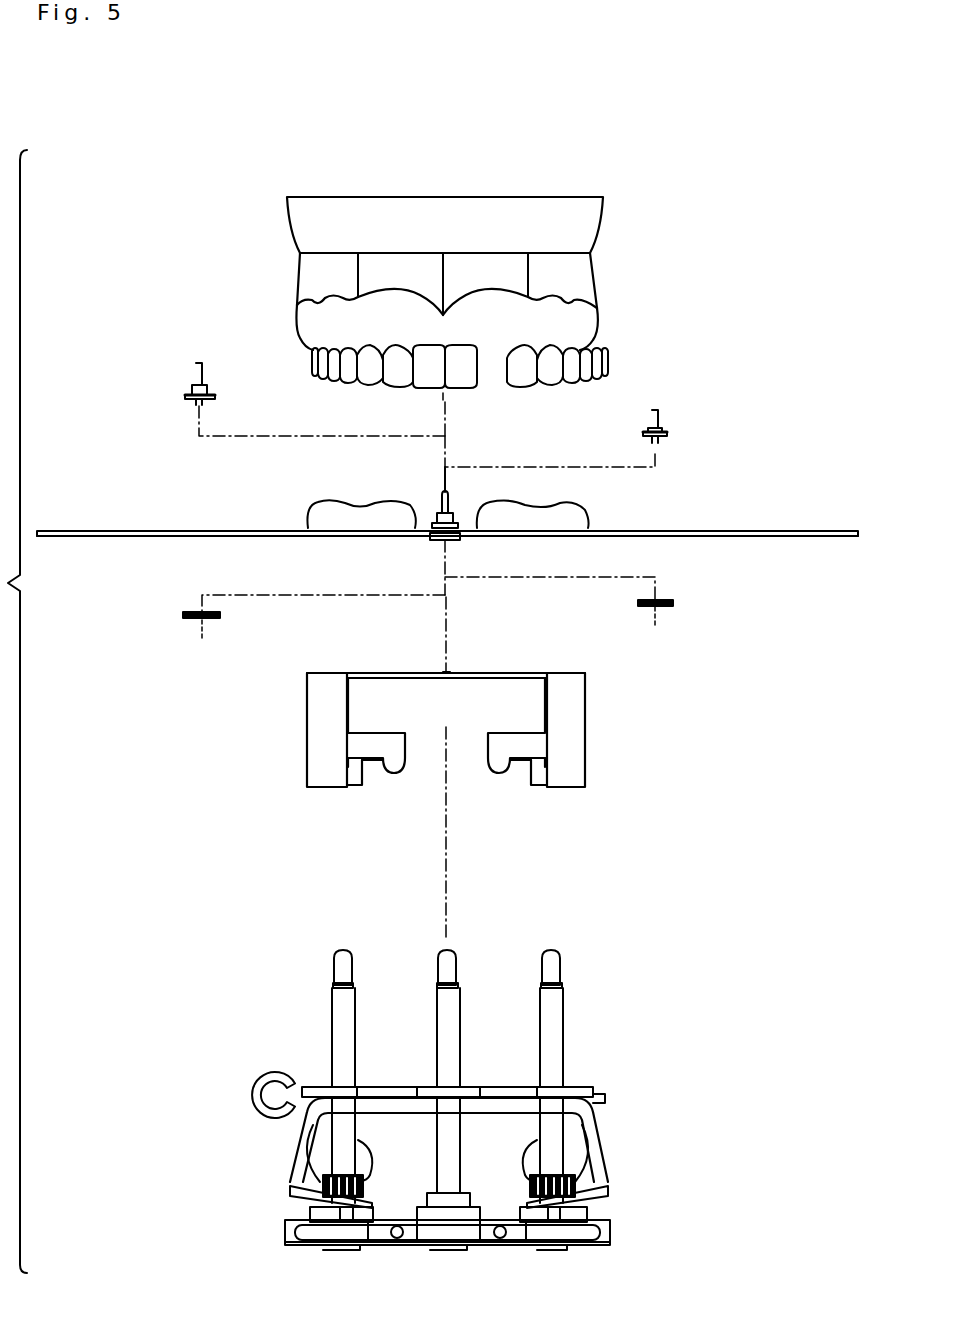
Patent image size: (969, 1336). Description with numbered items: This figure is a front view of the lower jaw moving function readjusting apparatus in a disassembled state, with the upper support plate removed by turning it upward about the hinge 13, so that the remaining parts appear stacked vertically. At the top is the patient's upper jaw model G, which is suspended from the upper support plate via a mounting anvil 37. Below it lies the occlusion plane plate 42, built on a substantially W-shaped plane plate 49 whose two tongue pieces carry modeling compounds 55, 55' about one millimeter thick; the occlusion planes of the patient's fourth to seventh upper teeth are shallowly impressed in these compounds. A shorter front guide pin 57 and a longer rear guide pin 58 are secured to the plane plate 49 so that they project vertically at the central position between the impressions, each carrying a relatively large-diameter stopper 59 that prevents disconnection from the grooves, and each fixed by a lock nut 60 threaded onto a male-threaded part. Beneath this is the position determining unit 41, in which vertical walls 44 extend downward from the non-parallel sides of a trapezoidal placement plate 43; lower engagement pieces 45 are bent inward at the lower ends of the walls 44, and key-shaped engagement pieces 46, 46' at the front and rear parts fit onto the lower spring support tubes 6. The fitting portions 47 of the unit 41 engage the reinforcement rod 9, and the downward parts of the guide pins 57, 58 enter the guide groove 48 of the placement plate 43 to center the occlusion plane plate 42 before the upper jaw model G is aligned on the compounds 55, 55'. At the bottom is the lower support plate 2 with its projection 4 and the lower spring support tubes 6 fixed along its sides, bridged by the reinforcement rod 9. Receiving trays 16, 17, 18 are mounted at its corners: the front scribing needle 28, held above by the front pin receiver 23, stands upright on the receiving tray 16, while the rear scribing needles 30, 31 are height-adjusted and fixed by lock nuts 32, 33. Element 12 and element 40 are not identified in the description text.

The mounting anvil 37 is at (570, 222).
The upper jaw model G is at (585, 273).
The rear guide pin 58 is at (199, 362).
The stopper 59 is at (215, 396).
The front guide pin 57 is at (658, 412).
The mounting assembly 40 is at (753, 463).
The occlusion plane plate 42 is at (842, 530).
The plane plate 49 is at (705, 530).
The modeling compound 55' is at (334, 502).
The modeling compound 55 is at (552, 500).
The lock nut 60 is at (460, 537).
The position determining unit 41 is at (455, 744).
The vertical wall 44 is at (320, 703).
The placement plate 43 is at (532, 673).
The guide groove 48 is at (447, 668).
The key-shaped engagement piece 46 is at (446, 753).
The key-shaped engagement piece 46' is at (461, 771).
The lower engagement piece 45 is at (362, 786).
The fitting portion 47 is at (372, 770).
The rear scribing needle 31 is at (358, 1040).
The front scribing needle 28 is at (460, 1040).
The rear scribing needle 30 is at (565, 1030).
The hinge 13 is at (595, 1090).
The ring 12 is at (252, 1095).
The lower support plate 2 is at (595, 1246).
The projection 4 is at (612, 1232).
The lock nut 33 is at (365, 1178).
The lock nut 32 is at (530, 1182).
The receiving tray 18 is at (322, 1223).
The receiving tray 17 is at (577, 1223).
The front pin receiver 23 is at (438, 1210).
The receiving tray 16 is at (465, 1233).
The reinforcement rod 9 is at (497, 1238).
The lower spring support tube 6 is at (370, 1235).